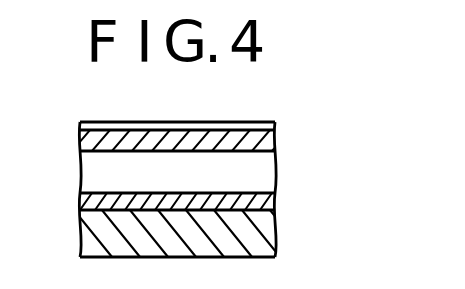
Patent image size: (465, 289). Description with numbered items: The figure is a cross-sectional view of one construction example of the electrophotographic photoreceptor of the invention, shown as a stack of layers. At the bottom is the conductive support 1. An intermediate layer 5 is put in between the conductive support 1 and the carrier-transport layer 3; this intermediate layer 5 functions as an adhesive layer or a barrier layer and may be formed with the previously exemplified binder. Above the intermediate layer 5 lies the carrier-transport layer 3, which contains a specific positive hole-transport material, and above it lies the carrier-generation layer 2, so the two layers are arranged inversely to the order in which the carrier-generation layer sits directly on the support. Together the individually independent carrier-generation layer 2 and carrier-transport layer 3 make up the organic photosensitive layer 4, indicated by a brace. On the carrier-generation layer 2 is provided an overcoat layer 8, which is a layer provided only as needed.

The conductive support 1 is at (276, 232).
The carrier-generation layer 2 is at (272, 141).
The carrier-transport layer 3 is at (272, 172).
The organic photosensitive layer 4 is at (70, 123).
The intermediate layer 5 is at (272, 197).
The overcoat layer 8 is at (258, 121).